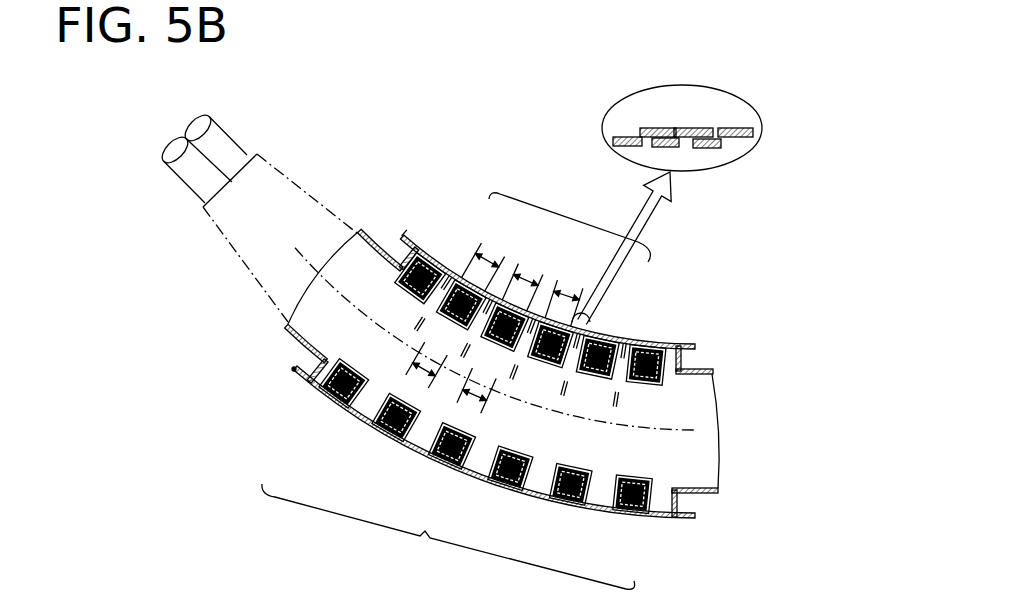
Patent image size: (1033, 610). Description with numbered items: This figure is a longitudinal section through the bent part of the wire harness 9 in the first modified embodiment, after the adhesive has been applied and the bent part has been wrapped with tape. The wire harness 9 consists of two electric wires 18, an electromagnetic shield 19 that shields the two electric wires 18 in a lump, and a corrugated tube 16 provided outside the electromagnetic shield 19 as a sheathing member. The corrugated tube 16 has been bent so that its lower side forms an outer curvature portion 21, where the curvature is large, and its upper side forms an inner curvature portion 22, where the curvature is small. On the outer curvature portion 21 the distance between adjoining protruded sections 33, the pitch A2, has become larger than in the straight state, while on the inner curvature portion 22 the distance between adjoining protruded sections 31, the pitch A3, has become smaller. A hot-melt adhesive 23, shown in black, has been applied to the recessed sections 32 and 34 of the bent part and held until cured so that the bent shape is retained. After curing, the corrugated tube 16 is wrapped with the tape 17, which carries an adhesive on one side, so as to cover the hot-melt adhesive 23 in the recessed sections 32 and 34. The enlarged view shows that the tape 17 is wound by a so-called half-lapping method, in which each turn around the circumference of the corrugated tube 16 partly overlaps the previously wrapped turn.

The wire harness 9 is at (700, 301).
The corrugated tube 16 is at (293, 343).
The tape 17 is at (410, 237).
The electric wire 18 is at (232, 142).
The electromagnetic shield 19 is at (272, 167).
The outer curvature portion 21 is at (448, 536).
The inner curvature portion 22 is at (543, 198).
The hot-melt adhesive 23 is at (358, 372).
The protruded section 31 is at (486, 314).
The recessed section 32 is at (522, 339).
The protruded section 33 is at (412, 408).
The recessed section 34 is at (430, 433).
The pitch A2 is at (422, 434).
The pitch A3 is at (523, 278).